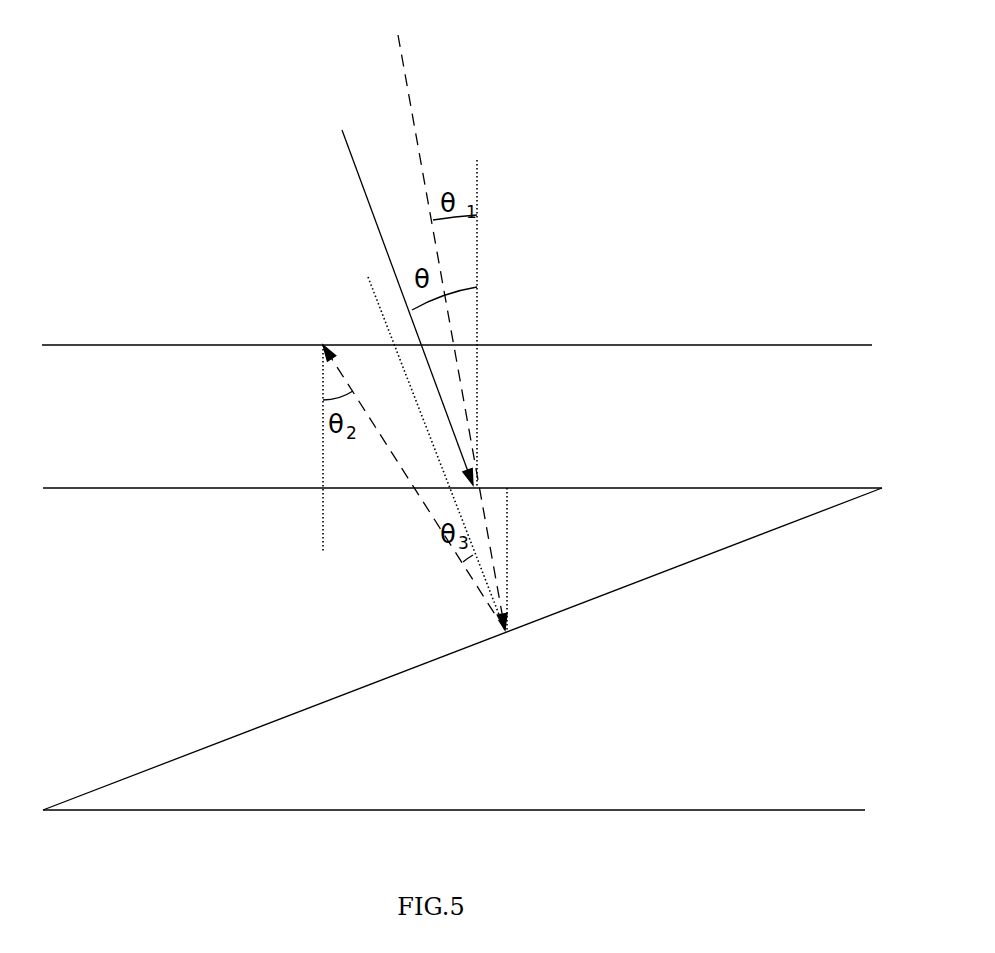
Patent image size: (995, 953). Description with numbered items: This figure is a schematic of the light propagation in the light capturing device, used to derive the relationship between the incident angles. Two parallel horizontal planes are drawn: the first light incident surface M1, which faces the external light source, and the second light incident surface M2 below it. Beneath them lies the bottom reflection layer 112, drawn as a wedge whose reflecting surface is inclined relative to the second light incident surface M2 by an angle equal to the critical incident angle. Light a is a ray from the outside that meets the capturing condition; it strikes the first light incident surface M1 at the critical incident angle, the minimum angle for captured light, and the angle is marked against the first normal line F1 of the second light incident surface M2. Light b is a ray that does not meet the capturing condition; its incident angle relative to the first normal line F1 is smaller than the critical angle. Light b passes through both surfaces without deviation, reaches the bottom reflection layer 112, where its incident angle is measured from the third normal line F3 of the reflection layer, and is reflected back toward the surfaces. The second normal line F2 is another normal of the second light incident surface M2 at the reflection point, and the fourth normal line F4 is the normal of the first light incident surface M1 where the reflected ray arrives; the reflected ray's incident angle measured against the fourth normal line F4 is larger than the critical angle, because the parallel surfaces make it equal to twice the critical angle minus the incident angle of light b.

The bottom reflection layer 112 is at (670, 568).
The first light incident surface M1 is at (457, 326).
The second light incident surface M2 is at (462, 469).
The first normal line F1 is at (485, 307).
The second normal line F2 is at (526, 559).
The third normal line F3 is at (423, 436).
The fourth normal line F4 is at (323, 473).
The light a is at (397, 289).
The light b is at (449, 315).